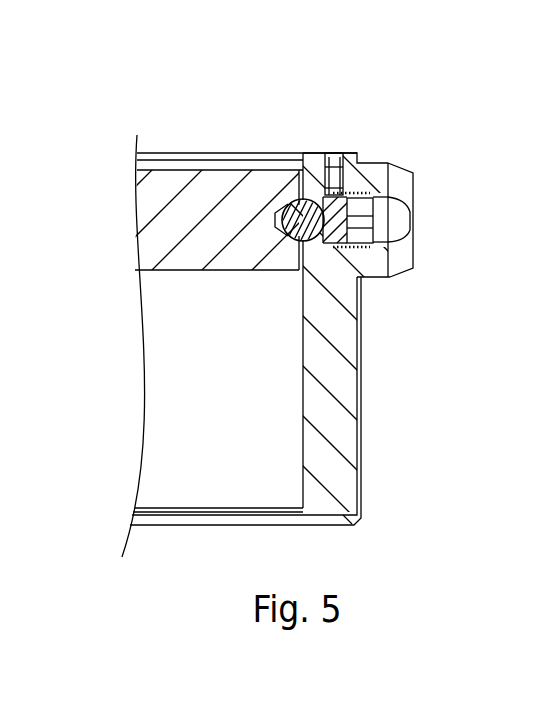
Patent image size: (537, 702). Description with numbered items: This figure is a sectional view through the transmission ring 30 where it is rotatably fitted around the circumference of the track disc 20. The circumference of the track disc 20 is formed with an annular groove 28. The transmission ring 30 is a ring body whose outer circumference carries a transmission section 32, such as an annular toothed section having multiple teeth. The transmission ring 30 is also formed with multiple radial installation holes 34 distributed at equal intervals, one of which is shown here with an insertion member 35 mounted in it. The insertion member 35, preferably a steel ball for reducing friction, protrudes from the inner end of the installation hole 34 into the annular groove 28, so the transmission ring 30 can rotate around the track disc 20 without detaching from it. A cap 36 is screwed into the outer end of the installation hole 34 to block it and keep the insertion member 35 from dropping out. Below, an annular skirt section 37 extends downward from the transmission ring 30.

The track disc 20 is at (190, 163).
The annular groove 28 is at (278, 212).
The transmission ring 30 is at (373, 448).
The transmission section 32 is at (407, 185).
The installation hole 34 is at (343, 265).
The insertion member 35 is at (298, 242).
The cap 36 is at (405, 270).
The skirt section 37 is at (315, 450).